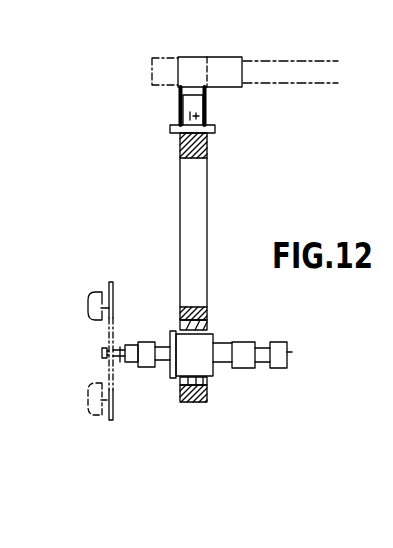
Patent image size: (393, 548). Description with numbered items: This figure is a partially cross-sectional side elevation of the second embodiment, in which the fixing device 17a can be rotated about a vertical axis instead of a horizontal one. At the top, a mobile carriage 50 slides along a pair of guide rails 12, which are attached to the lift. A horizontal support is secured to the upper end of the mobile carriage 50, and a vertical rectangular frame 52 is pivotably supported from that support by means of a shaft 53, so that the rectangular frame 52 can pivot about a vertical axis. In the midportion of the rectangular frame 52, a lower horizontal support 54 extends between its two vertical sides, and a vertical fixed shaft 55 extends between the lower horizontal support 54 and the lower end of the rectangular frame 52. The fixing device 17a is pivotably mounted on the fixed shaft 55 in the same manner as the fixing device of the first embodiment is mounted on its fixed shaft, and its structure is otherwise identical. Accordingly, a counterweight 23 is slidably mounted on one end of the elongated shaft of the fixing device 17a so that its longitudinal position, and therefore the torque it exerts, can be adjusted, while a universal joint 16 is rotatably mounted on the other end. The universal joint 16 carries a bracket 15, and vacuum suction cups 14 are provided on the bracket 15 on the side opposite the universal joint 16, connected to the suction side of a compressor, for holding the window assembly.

The guide rails 12 is at (271, 70).
The mobile carriage 50 is at (180, 197).
The vertical rectangular frame 52 is at (207, 228).
The shaft 53 is at (208, 118).
The lower horizontal support 54 is at (207, 313).
The vertical fixed shaft 55 is at (207, 326).
The fixing device 17a is at (210, 370).
The counterweight 23 is at (292, 352).
The vacuum suction cups 14 is at (90, 294).
The bracket 15 is at (114, 410).
The universal joint 16 is at (120, 357).